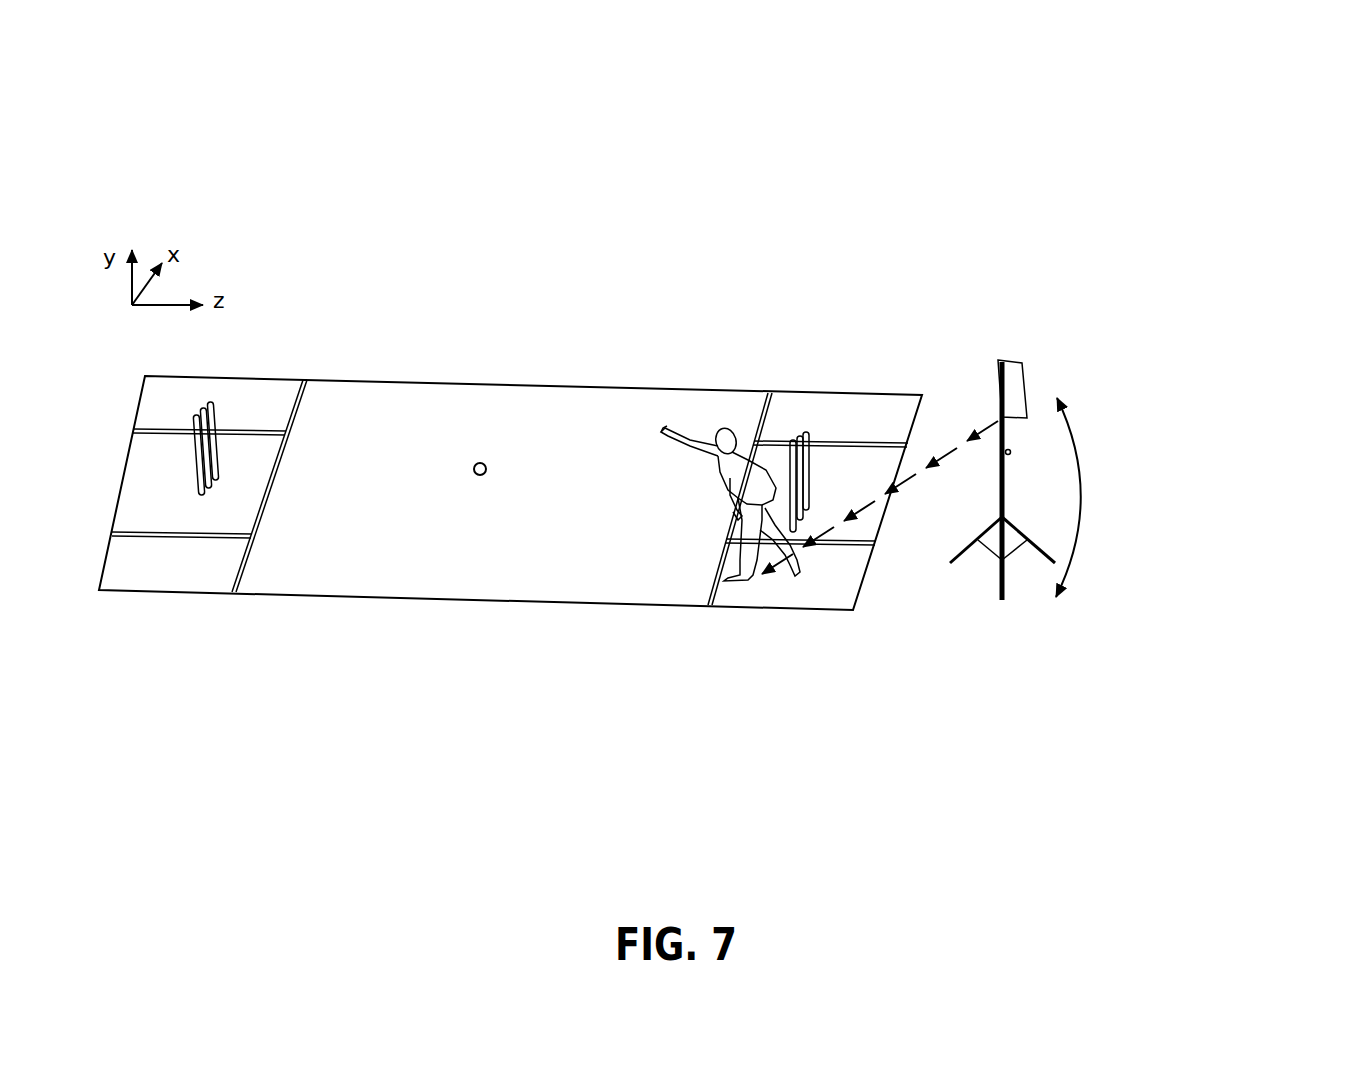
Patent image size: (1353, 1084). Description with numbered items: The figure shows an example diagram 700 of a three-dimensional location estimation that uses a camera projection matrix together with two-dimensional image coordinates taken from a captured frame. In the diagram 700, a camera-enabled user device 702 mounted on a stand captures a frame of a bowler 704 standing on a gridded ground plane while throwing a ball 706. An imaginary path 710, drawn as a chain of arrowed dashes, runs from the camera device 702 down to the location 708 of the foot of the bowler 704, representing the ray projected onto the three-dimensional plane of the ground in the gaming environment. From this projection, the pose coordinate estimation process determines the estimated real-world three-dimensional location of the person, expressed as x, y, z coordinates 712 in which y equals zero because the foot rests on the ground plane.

The diagram 700 is at (1256, 100).
The camera device 702 is at (1036, 370).
The bowler 704 is at (730, 488).
The ball 706 is at (496, 485).
The location of the foot 708 is at (740, 589).
The path 710 is at (940, 458).
The x, y, z coordinates 712 is at (720, 590).